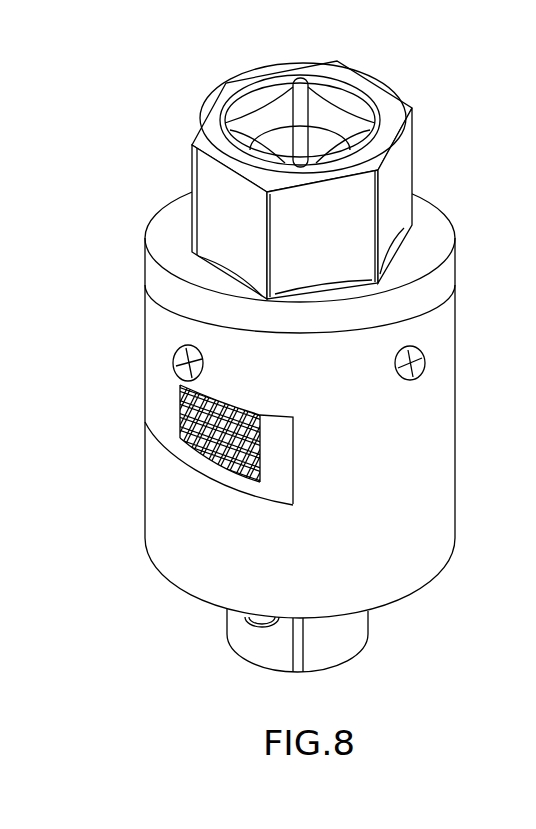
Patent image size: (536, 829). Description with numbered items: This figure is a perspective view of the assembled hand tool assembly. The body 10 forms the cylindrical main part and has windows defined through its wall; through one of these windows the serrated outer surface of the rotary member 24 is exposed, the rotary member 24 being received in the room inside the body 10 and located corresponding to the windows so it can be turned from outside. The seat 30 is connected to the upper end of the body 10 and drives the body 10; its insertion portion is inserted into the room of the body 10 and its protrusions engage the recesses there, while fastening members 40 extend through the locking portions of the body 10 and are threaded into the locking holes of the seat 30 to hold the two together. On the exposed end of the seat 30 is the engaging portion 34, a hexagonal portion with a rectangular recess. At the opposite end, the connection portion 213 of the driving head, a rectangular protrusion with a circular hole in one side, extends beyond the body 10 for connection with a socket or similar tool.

The body 10 is at (422, 553).
The seat 30 is at (433, 222).
The engaging portion 34 is at (201, 131).
The fastening members 40 is at (413, 378).
The rotary member 24 is at (157, 385).
The connection portion 213 is at (343, 643).